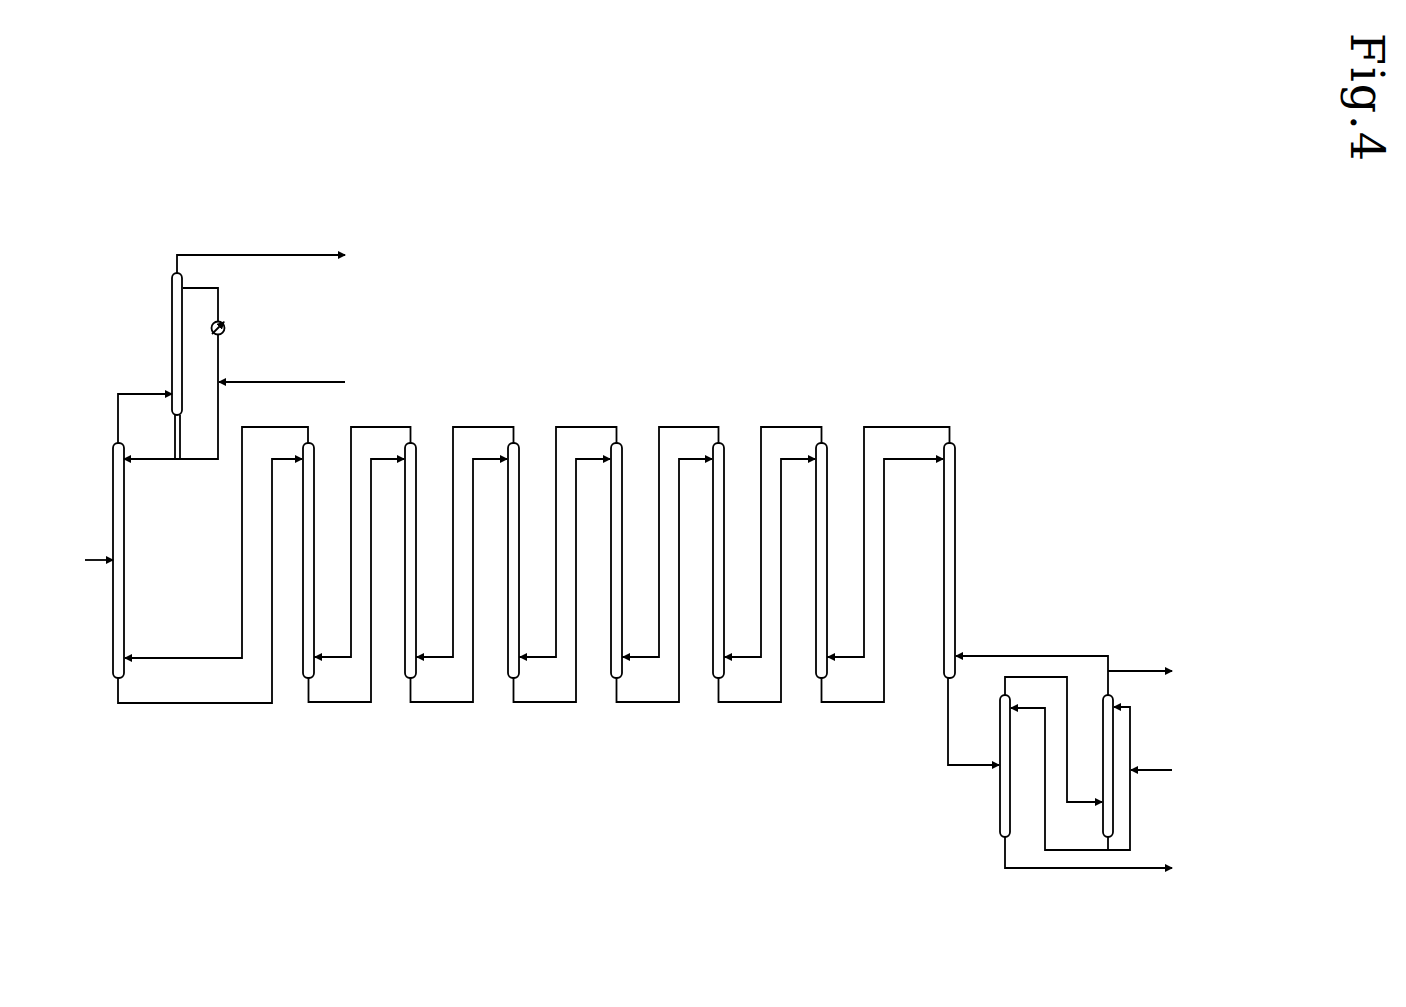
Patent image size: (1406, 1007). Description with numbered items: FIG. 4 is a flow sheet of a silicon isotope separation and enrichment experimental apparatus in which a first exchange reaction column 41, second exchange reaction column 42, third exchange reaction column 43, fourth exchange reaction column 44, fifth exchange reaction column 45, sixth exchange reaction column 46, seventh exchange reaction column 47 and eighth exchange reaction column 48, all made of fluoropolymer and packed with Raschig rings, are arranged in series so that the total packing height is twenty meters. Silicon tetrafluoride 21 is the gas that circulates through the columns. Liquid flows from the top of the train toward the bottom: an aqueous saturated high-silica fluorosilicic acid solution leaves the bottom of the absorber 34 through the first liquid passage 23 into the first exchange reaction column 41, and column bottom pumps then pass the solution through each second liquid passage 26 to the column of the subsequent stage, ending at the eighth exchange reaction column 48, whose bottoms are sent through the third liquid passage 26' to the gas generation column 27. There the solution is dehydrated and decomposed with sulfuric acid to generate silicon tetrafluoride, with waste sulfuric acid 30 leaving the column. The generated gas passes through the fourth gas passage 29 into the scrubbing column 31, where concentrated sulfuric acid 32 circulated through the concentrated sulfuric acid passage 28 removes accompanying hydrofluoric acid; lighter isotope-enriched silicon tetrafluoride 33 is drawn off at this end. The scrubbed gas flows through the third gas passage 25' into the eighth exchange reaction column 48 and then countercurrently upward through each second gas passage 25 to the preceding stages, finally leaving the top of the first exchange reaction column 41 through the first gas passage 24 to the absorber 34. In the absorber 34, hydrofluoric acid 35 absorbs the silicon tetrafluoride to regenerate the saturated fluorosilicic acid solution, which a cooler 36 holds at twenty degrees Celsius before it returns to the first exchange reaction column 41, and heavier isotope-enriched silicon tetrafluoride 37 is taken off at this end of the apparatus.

The silicon tetrafluoride 21 is at (84, 560).
The first liquid passage 23 is at (141, 463).
The first gas passage 24 is at (116, 410).
The second gas passage 25 is at (216, 542).
The third gas passage 25' is at (1032, 659).
The second liquid passage 26 is at (210, 599).
The third liquid passage 26' is at (955, 721).
The gas generation column 27 is at (997, 751).
The concentrated sulfuric acid passage 28 is at (1043, 797).
The fourth gas passage 29 is at (1060, 678).
The waste sulfuric acid 30 is at (1107, 857).
The scrubbing column 31 is at (1101, 751).
The concentrated sulfuric acid 32 is at (1158, 778).
The lighter isotope-enriched silicon tetrafluoride 33 is at (1157, 671).
The absorber 34 is at (170, 346).
The hydrofluoric acid 35 is at (301, 382).
The cooler 36 is at (228, 333).
The heavier isotope-enriched silicon tetrafluoride 37 is at (280, 259).
The first exchange reaction column 41 is at (110, 511).
The second exchange reaction column 42 is at (313, 443).
The third exchange reaction column 43 is at (415, 443).
The fourth exchange reaction column 44 is at (519, 443).
The fifth exchange reaction column 45 is at (622, 443).
The sixth exchange reaction column 46 is at (724, 443).
The seventh exchange reaction column 47 is at (827, 443).
The eighth exchange reaction column 48 is at (960, 508).